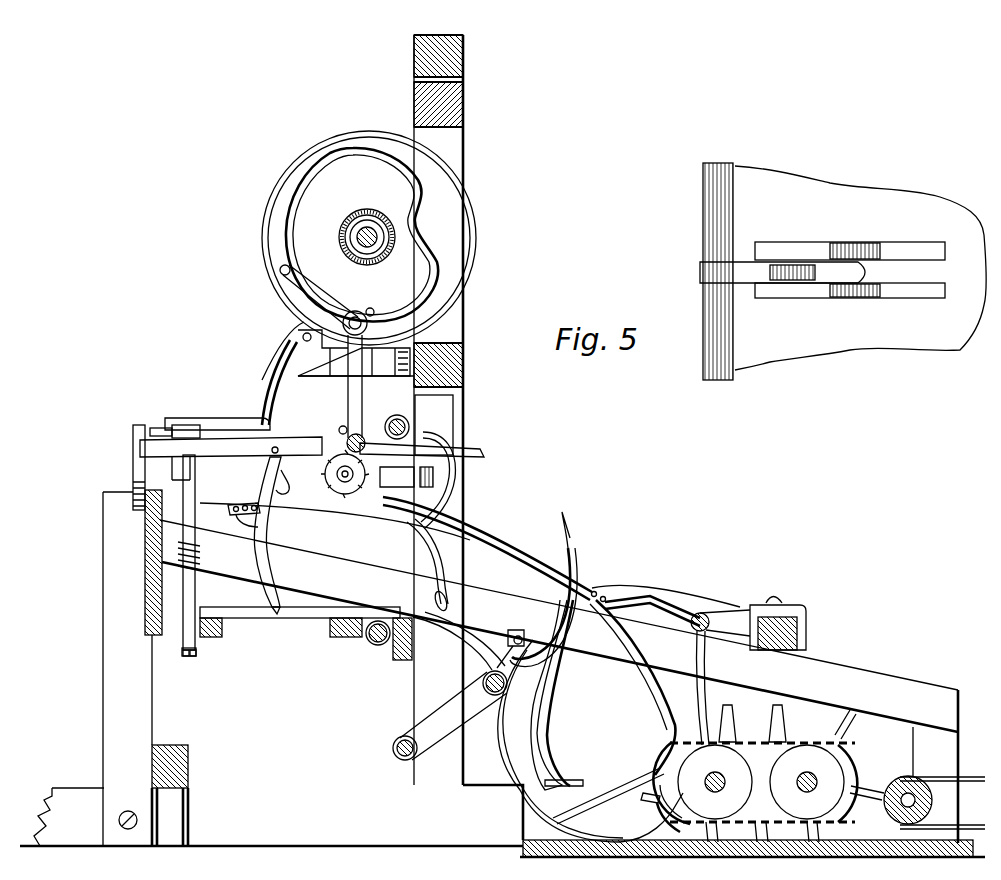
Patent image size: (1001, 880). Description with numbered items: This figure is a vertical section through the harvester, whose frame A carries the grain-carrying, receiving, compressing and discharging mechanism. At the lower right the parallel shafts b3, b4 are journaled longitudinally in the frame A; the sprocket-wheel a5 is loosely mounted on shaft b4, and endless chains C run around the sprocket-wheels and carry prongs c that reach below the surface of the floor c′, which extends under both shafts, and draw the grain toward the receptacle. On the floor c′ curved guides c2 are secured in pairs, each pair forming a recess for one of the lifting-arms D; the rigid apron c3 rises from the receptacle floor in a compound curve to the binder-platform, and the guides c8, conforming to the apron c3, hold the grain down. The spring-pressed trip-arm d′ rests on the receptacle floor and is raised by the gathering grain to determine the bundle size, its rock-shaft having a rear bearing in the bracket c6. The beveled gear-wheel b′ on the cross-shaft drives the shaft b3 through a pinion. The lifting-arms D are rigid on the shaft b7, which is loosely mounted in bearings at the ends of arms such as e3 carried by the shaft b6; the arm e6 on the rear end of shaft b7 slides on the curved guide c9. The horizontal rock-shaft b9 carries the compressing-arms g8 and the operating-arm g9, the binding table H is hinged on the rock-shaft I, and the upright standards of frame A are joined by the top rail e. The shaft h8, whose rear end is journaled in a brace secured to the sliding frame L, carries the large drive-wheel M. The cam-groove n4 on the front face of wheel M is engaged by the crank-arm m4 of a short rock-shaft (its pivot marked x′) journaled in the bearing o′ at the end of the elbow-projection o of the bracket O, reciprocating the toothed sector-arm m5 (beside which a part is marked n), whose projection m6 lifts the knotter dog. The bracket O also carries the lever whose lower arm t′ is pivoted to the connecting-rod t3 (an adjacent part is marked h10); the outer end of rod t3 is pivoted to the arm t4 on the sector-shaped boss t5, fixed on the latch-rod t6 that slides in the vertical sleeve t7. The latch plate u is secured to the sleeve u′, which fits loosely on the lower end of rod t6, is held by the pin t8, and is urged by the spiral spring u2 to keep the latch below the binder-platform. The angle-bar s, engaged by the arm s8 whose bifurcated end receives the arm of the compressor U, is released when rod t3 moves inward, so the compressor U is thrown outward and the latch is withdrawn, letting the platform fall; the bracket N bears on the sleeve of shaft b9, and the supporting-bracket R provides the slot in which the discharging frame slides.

The frame A is at (502, 673).
The sliding frame L is at (448, 410).
The top rail e is at (448, 56).
The large drive-wheel M is at (476, 248).
The shaft h8 is at (364, 228).
The cam-groove n4 is at (290, 255).
The crank-arm m4 is at (338, 277).
The bearing o′ is at (372, 307).
The pivot x′ is at (368, 323).
The bracket O is at (356, 362).
The elbow-projection o is at (370, 366).
The arm h10 is at (289, 382).
The lower lever arm t′ is at (278, 368).
The supporting-bracket R is at (133, 453).
The connecting-rod t3 is at (222, 418).
The sector-shaped boss t5 is at (190, 425).
The laterally-extending arm t4 is at (160, 428).
The angle-bar s is at (231, 458).
The arm s8 is at (288, 478).
The compressor U is at (276, 581).
The vertical sleeve t7 is at (228, 510).
The upright sleeve u′ is at (195, 600).
The spiral spring u2 is at (200, 558).
The latch plate u is at (196, 652).
The latch-rod t6 is at (179, 662).
The pin t8 is at (200, 662).
The binding platform H is at (287, 598).
The rock-shaft I is at (378, 645).
The bracket N is at (415, 410).
The horizontal rock-shaft b9 is at (405, 418).
The toothed sector-arm m5 is at (345, 438).
The gear n is at (385, 490).
The projection m6 is at (484, 452).
The compressing-arms g8 is at (458, 478).
The operating-arm g9 is at (432, 548).
The guides c8 is at (585, 578).
The laterally-extending bracket c6 is at (722, 610).
The beveled gear-wheel b′ is at (690, 620).
The sprocket-wheel a5 is at (712, 700).
The lifting-arms D is at (548, 658).
The arm e6 is at (518, 630).
The shaft b7 is at (497, 695).
The arm e3 is at (453, 716).
The shaft b6 is at (393, 748).
The rigid apron c3 is at (552, 714).
The curved guide c9 is at (560, 736).
The trip-arm d′ is at (634, 782).
The curved guides c2 is at (897, 285).
The prongs c is at (648, 805).
The endless chains C is at (795, 718).
The shaft b3 is at (715, 782).
The shaft b4 is at (870, 766).
The floor c′ is at (870, 838).